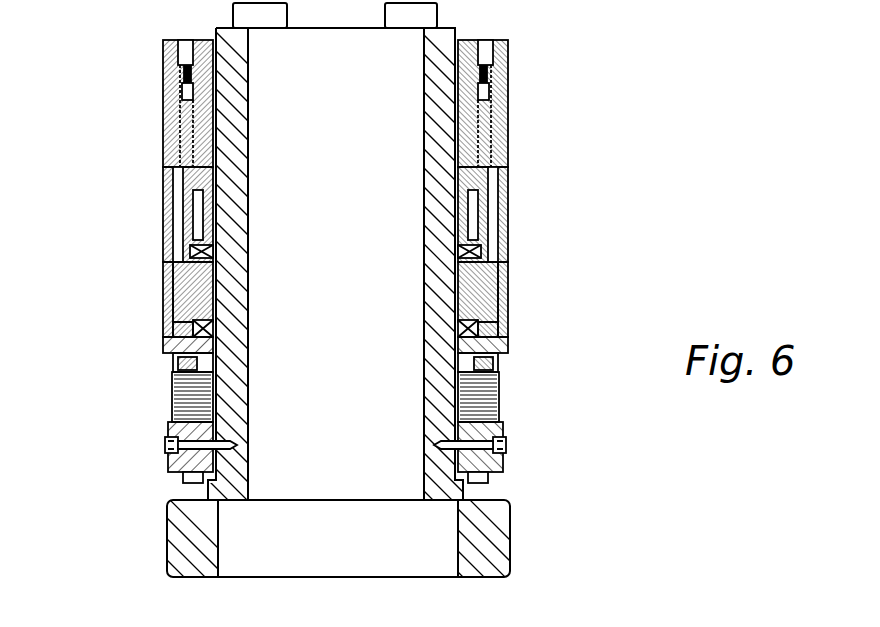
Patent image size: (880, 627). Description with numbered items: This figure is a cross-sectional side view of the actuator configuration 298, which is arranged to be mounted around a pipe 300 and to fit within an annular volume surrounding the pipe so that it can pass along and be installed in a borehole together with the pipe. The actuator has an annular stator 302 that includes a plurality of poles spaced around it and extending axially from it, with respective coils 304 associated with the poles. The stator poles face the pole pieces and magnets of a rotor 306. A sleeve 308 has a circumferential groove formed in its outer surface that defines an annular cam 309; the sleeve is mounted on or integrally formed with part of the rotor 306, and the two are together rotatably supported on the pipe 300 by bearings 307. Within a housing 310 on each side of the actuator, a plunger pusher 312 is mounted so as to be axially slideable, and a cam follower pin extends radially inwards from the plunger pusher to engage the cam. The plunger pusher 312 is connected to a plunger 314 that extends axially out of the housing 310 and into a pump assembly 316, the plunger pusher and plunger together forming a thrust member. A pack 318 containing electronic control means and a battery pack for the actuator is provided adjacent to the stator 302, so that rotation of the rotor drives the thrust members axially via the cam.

The actuator configuration 298 is at (141, 437).
The pipe 300 is at (244, 283).
The annular stator 302 is at (510, 426).
The coils 304 is at (503, 398).
The rotor 306 is at (512, 342).
The bearings 307 is at (178, 280).
The sleeve 308 is at (498, 274).
The annular cam 309 is at (470, 296).
The housing 310 is at (508, 232).
The plunger pusher 312 is at (168, 248).
The plunger 314 is at (168, 182).
The pump assembly 316 is at (507, 63).
The pack 318 is at (492, 530).